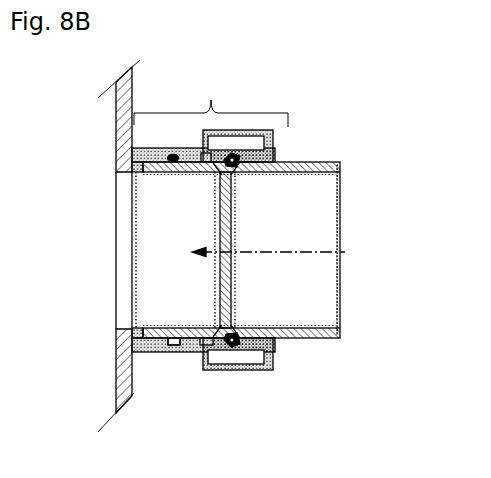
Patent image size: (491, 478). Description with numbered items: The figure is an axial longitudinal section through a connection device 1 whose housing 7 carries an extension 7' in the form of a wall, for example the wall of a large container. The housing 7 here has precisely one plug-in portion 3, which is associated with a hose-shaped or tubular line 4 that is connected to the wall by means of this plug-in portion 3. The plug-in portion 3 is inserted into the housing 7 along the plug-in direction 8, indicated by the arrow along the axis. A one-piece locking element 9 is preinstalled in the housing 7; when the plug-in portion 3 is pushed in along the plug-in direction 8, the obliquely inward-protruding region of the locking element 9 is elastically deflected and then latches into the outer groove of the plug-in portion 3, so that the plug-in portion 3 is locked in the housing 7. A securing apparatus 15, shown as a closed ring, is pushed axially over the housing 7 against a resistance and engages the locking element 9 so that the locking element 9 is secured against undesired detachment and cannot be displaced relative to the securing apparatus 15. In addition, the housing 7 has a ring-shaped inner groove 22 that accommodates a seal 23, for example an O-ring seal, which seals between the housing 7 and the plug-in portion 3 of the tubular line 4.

The connection device 1 is at (248, 235).
The plug-in portion 3 is at (211, 100).
The tubular line 4 is at (322, 163).
The housing 7 is at (203, 247).
The extension 7' is at (87, 246).
The plug-in direction 8 is at (268, 240).
The locking element 9 is at (233, 343).
The securing apparatus 15 is at (268, 156).
The inner groove 22 is at (173, 343).
The seal 23 is at (171, 155).